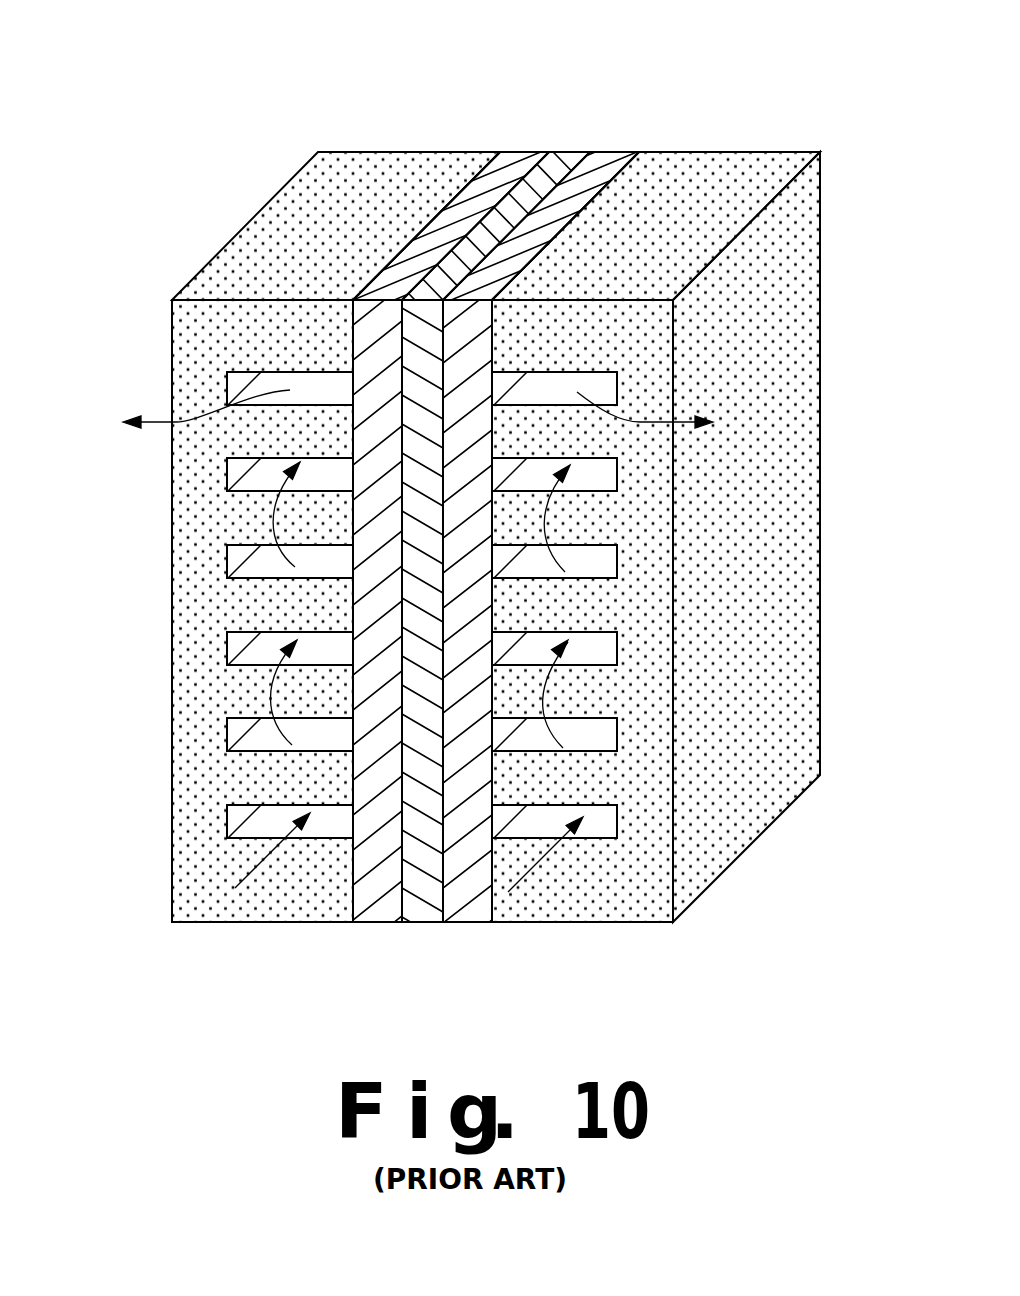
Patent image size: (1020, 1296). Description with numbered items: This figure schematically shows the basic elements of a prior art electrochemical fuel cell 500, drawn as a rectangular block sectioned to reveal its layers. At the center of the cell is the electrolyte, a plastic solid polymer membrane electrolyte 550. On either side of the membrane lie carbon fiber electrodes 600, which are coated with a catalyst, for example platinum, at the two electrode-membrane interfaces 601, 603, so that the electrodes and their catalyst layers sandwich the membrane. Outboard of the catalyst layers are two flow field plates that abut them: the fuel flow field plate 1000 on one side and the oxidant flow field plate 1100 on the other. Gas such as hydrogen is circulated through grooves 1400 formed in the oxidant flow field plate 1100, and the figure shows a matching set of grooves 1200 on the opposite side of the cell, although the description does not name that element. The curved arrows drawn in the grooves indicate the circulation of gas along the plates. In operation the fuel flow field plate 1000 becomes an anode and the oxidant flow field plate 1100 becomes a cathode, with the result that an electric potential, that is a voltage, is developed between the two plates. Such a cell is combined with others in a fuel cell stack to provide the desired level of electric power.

The fuel cell 500 is at (624, 130).
The solid polymer membrane electrolyte 550 is at (578, 153).
The carbon fiber electrodes 600 is at (502, 150).
The electrode-membrane interface 601 is at (537, 166).
The electrode-membrane interface 603 is at (585, 176).
The fuel flow field plate 1000 is at (795, 340).
The oxidant flow field plate 1100 is at (265, 208).
The right side slots 1200 is at (598, 742).
The grooves 1400 is at (263, 828).